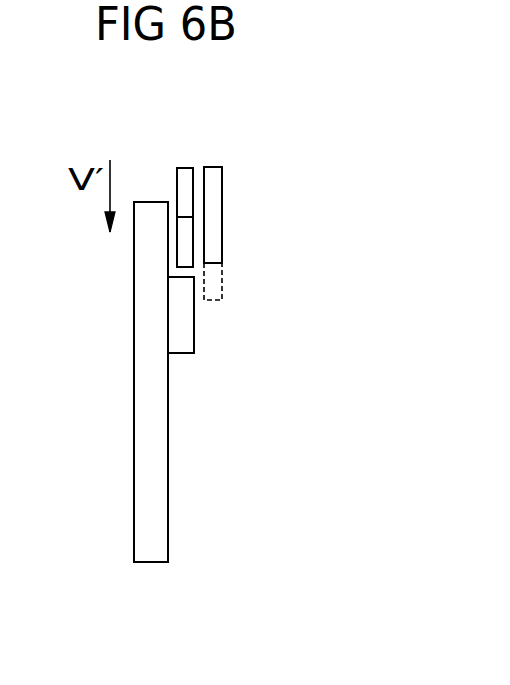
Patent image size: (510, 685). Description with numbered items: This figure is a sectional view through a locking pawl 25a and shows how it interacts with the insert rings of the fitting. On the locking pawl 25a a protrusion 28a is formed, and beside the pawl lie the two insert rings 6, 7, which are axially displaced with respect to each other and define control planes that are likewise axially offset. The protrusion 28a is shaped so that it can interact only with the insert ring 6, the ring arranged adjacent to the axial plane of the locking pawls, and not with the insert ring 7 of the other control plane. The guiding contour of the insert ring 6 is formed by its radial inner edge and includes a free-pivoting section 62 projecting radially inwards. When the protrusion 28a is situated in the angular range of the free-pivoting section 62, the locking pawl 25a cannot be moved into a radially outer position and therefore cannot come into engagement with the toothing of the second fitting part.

The locking pawl 25a is at (143, 432).
The protrusion 28a is at (183, 340).
The insert ring 6 is at (185, 180).
The insert ring 7 is at (212, 218).
The free-pivoting section 62 is at (185, 270).